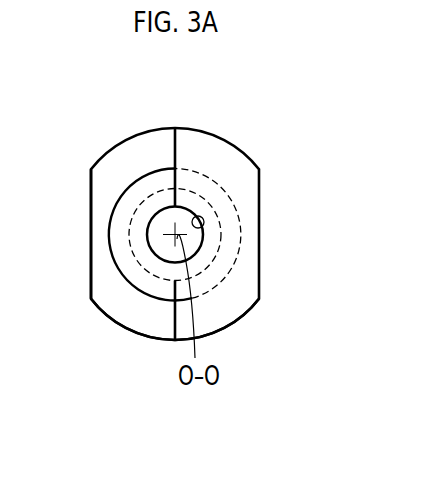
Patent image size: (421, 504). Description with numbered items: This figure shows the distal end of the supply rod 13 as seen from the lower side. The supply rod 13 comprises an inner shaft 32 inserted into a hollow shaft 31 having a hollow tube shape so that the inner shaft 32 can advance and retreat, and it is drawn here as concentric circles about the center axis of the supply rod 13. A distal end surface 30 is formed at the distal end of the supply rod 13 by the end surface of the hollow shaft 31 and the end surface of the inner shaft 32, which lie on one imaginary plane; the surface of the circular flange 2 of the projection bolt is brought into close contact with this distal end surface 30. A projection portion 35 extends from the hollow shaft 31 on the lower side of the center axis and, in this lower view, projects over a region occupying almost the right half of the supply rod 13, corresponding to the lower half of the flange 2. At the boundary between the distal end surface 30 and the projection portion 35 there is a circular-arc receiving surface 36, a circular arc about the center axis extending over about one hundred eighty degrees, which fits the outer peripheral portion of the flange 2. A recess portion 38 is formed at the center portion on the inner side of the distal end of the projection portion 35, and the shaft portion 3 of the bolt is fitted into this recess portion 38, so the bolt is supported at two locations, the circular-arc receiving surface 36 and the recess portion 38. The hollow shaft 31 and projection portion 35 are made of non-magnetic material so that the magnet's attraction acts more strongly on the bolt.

The circular flange 2 is at (110, 238).
The shaft portion 3 is at (149, 247).
The supply rod 13 is at (232, 133).
The distal end surface 30 is at (133, 155).
The hollow shaft 31 is at (91, 195).
The inner shaft 32 is at (146, 282).
The projection portion 35 is at (237, 302).
The circular-arc receiving surface 36 is at (233, 258).
The recess portion 38 is at (200, 216).